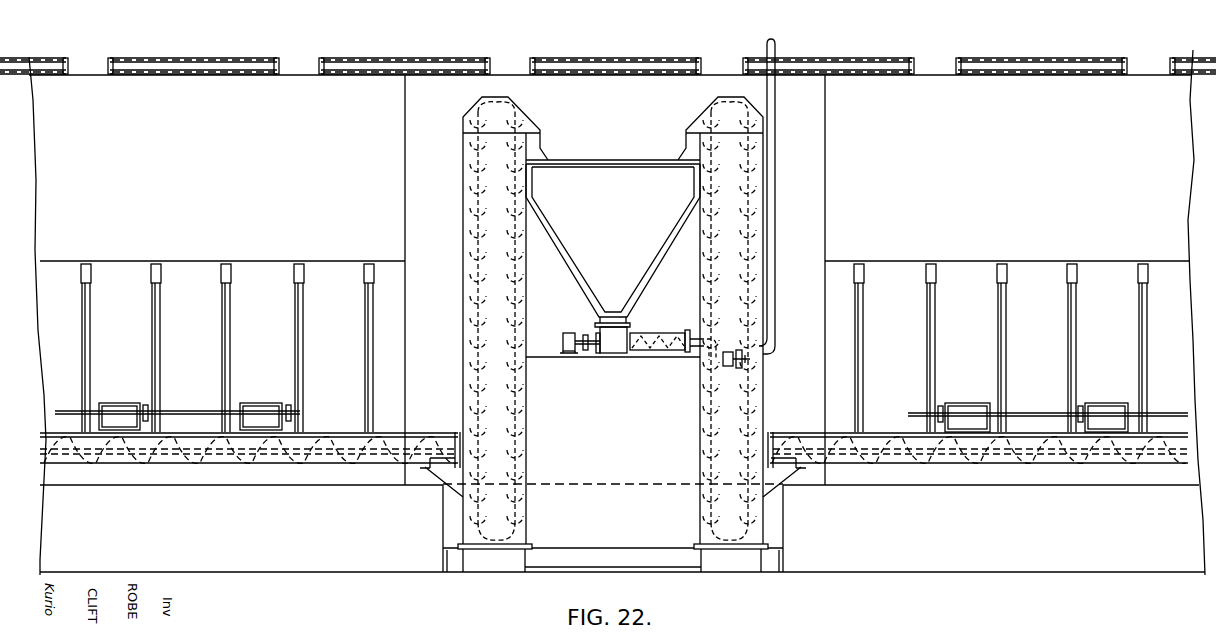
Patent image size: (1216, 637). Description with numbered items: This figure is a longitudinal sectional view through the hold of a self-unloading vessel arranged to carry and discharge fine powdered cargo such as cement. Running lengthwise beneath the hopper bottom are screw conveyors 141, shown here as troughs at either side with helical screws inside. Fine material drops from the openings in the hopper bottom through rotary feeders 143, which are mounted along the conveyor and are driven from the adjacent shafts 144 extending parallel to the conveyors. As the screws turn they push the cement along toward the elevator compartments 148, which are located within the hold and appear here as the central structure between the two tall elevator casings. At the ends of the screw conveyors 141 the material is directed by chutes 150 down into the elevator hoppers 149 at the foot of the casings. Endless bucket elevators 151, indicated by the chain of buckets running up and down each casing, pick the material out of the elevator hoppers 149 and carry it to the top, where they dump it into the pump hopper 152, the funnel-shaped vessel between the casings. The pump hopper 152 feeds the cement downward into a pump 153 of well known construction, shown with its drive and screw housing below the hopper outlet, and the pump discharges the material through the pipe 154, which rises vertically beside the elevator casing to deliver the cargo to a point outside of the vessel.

The screw conveyor 141 is at (1020, 460).
The rotary feeder 143 is at (960, 422).
The shaft 144 is at (1016, 413).
The elevator compartment 148 is at (613, 401).
The elevator hopper 149 is at (760, 546).
The chute 150 is at (777, 470).
The endless bucket elevator 151 is at (710, 235).
The pump hopper 152 is at (634, 160).
The pump 153 is at (648, 334).
The pipe 154 is at (773, 146).